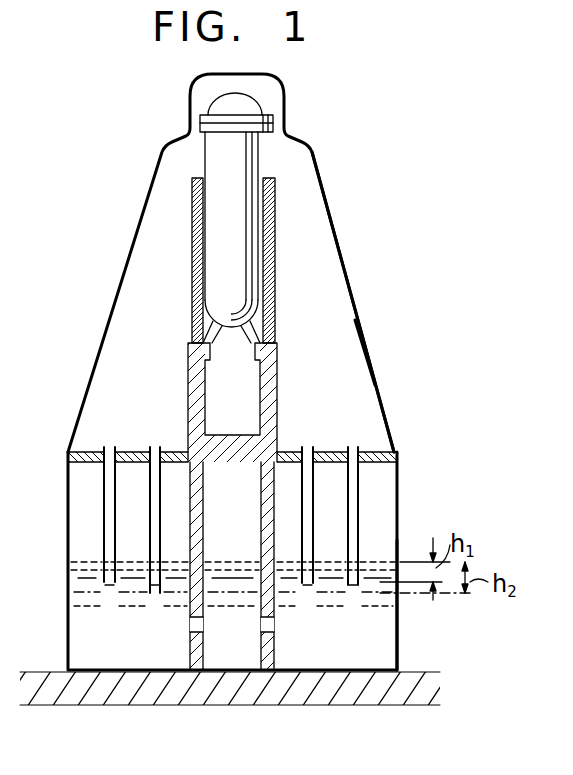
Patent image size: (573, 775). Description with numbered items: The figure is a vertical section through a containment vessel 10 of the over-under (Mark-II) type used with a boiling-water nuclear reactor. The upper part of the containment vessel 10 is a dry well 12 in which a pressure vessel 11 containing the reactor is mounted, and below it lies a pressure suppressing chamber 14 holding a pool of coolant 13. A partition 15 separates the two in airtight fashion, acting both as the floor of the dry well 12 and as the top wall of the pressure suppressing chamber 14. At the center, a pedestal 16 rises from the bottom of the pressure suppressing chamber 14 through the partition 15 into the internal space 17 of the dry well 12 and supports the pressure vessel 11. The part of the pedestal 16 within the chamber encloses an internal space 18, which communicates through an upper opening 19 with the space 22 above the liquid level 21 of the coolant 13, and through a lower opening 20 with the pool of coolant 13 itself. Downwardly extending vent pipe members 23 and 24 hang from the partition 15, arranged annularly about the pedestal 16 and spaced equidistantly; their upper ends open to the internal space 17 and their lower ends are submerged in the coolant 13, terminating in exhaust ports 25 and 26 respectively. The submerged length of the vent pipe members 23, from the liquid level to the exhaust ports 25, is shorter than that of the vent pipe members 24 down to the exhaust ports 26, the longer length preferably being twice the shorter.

The containment vessel 10 is at (321, 199).
The pressure vessel 11 is at (217, 168).
The dry well 12 is at (357, 330).
The coolant 13 is at (338, 662).
The pressure suppressing chamber 14 is at (397, 638).
The partition 15 is at (88, 452).
The pedestal 16 is at (190, 600).
The internal space 17 is at (367, 370).
The internal space 18 is at (248, 521).
The opening 19 is at (191, 497).
The opening 20 is at (203, 625).
The liquid level 21 is at (378, 560).
The space 22 is at (74, 487).
The vent pipe member 23 is at (103, 520).
The vent pipe member 24 is at (150, 470).
The exhaust port 25 is at (108, 586).
The exhaust port 26 is at (153, 594).